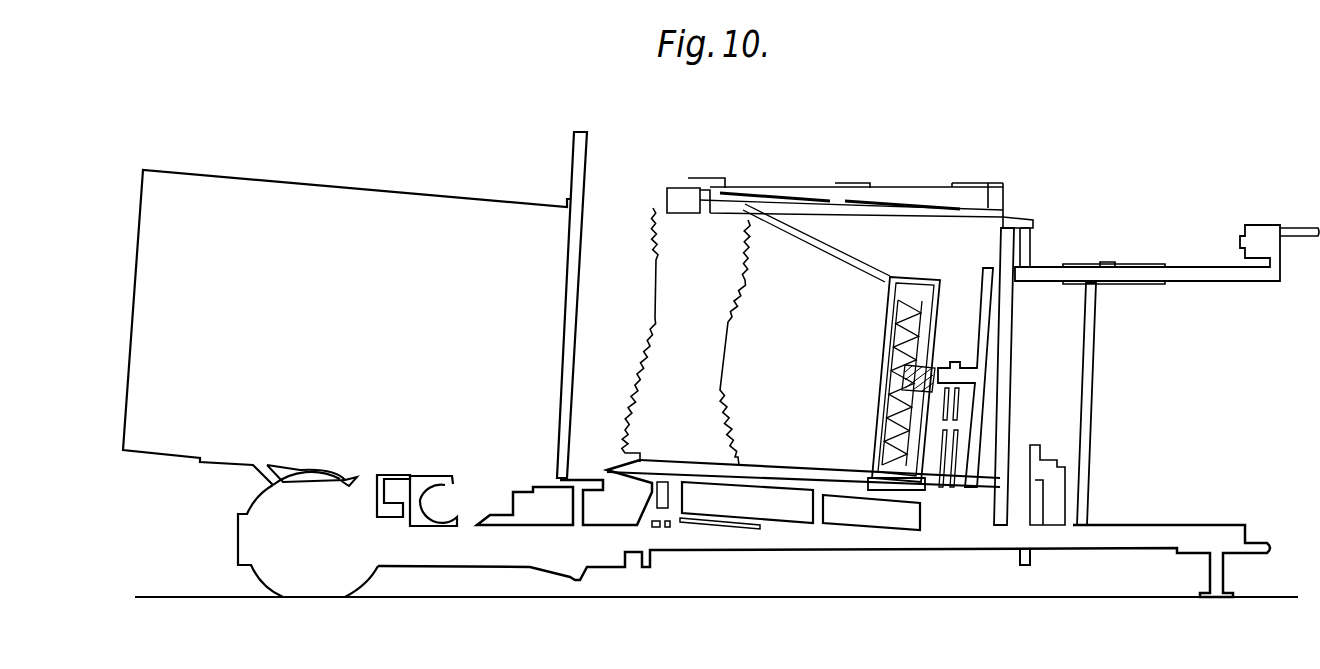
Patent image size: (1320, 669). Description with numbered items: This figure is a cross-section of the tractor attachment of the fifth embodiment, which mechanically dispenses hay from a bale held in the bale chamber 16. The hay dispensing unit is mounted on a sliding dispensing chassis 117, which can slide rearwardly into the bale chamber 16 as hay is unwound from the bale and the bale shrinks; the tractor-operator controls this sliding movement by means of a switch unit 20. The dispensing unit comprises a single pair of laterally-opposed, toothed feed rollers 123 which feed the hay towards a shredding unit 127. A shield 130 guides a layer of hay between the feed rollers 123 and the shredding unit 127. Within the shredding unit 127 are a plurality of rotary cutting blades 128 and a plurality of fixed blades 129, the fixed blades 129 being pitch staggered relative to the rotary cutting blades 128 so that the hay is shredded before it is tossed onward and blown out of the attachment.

The bale chamber 16 is at (353, 175).
The switch unit 20 is at (1262, 230).
The sliding dispensing chassis 117 is at (792, 483).
The toothed feed rollers 123 is at (668, 232).
The shredding unit 127 is at (917, 267).
The rotary cutting blades 128 is at (920, 322).
The fixed blades 129 is at (880, 337).
The shield 130 is at (863, 303).